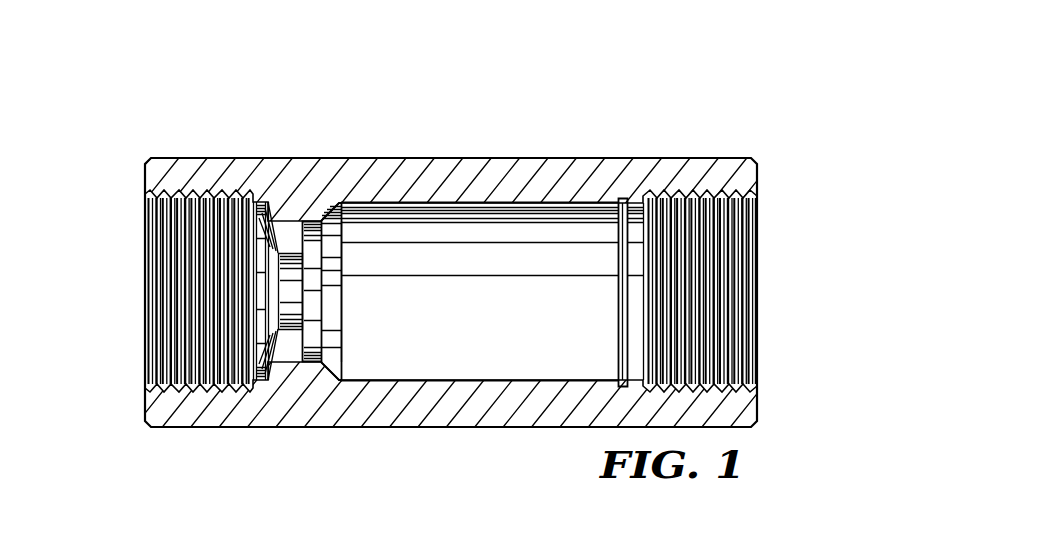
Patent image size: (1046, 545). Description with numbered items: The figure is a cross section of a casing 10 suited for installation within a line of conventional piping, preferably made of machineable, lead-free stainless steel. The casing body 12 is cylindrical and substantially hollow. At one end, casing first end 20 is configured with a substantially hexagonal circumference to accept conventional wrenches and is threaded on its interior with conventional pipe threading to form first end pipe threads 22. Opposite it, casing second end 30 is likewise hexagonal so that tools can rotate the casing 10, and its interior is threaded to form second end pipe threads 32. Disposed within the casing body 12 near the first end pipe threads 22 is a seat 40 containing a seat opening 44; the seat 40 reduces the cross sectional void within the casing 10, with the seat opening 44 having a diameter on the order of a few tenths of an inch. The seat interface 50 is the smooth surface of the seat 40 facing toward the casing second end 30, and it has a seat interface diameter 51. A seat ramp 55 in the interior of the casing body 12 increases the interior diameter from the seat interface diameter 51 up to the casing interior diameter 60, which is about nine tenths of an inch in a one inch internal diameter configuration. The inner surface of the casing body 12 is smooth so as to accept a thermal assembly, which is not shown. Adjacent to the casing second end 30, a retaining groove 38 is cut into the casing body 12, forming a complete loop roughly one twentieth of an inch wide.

The casing 10 is at (510, 117).
The casing body 12 is at (488, 414).
The casing first end 20 is at (188, 168).
The first end pipe threads 22 is at (180, 265).
The casing second end 30 is at (718, 168).
The second end pipe threads 32 is at (727, 282).
The retaining groove 38 is at (622, 198).
The seat 40 is at (290, 350).
The seat opening 44 is at (284, 290).
The seat interface 50 is at (300, 222).
The seat interface diameter 51 is at (338, 219).
The seat ramp 55 is at (334, 362).
The casing interior diameter 60 is at (467, 203).